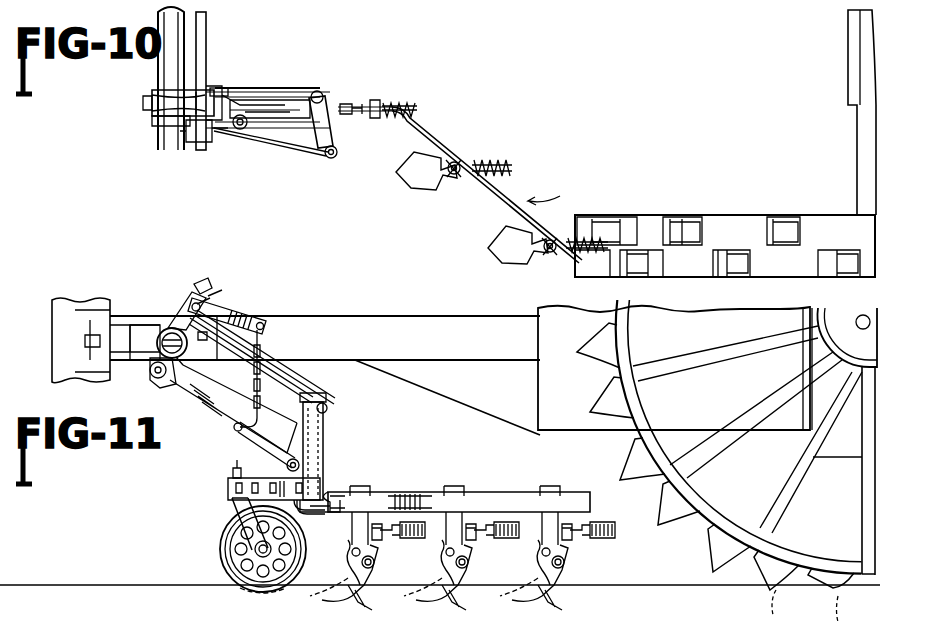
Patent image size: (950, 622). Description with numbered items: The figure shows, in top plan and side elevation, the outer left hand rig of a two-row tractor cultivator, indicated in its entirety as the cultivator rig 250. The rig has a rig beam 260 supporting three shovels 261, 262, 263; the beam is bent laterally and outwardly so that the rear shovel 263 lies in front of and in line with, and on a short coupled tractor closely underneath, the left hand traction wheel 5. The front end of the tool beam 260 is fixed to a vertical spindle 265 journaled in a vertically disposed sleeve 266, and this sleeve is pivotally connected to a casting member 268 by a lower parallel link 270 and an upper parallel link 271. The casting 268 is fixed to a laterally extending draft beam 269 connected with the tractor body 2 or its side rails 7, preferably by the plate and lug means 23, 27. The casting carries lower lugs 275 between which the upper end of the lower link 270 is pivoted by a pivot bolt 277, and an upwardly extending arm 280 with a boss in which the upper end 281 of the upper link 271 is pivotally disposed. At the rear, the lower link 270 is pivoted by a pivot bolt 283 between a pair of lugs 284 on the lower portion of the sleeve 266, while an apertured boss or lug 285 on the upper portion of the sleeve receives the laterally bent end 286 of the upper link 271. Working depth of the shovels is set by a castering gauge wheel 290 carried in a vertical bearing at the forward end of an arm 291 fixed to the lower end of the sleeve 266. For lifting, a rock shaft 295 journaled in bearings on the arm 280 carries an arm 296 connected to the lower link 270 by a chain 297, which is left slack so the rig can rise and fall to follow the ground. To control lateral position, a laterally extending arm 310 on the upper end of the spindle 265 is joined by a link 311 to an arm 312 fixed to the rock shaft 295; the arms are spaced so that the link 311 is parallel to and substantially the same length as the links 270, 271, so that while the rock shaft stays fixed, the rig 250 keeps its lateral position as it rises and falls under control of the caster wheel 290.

In FIG. 11, the tractor body 2 is at (451, 305).
In FIG. 10, the traction wheel 5 is at (722, 236).
In FIG. 11, the traction wheel 5 is at (706, 508).
In FIG. 11, the side rails 7 is at (315, 323).
In FIG. 11, the plate means 23 is at (168, 328).
In FIG. 11, the lug means 27 is at (138, 316).
In FIG. 10, the cultivator rig 250 is at (558, 187).
In FIG. 10, the rig beam 260 is at (446, 153).
In FIG. 11, the rig beam 260 is at (425, 497).
In FIG. 10, the shovel 261 is at (352, 147).
In FIG. 11, the shovel 261 is at (375, 599).
In FIG. 10, the shovel 262 is at (422, 181).
In FIG. 11, the shovel 262 is at (440, 571).
In FIG. 10, the rear shovel 263 is at (508, 247).
In FIG. 11, the rear shovel 263 is at (535, 571).
In FIG. 10, the vertical spindle 265 is at (322, 94).
In FIG. 11, the vertical spindle 265 is at (312, 513).
In FIG. 11, the sleeve 266 is at (320, 446).
In FIG. 10, the casting member 268 is at (170, 118).
In FIG. 11, the casting member 268 is at (190, 398).
In FIG. 10, the draft beam 269 is at (170, 55).
In FIG. 10, the lower parallel link 270 is at (281, 106).
In FIG. 11, the lower parallel link 270 is at (246, 430).
In FIG. 10, the upper parallel link 271 is at (272, 98).
In FIG. 11, the upper parallel link 271 is at (290, 383).
In FIG. 11, the lower lugs 275 is at (150, 372).
In FIG. 11, the pivot bolt 277 is at (160, 386).
In FIG. 10, the upwardly extending arm 280 is at (150, 106).
In FIG. 11, the upwardly extending arm 280 is at (182, 298).
In FIG. 11, the upper end of parallel link 281 is at (190, 363).
In FIG. 11, the pivot bolt 283 is at (318, 469).
In FIG. 11, the lugs 284 is at (292, 456).
In FIG. 10, the boss or lug 285 is at (358, 96).
In FIG. 11, the laterally bent end 286 is at (328, 410).
In FIG. 11, the castering gauge wheel 290 is at (225, 531).
In FIG. 11, the arm 291 is at (262, 484).
In FIG. 10, the lifting rock shaft 295 is at (201, 58).
In FIG. 11, the lifting rock shaft 295 is at (238, 268).
In FIG. 11, the arm 296 is at (232, 302).
In FIG. 11, the chain 297 is at (243, 378).
In FIG. 10, the laterally extending arm 310 is at (375, 105).
In FIG. 10, the link 311 is at (301, 150).
In FIG. 11, the link 311 is at (303, 386).
In FIG. 10, the arm 312 is at (191, 147).
In FIG. 11, the arm 312 is at (196, 284).